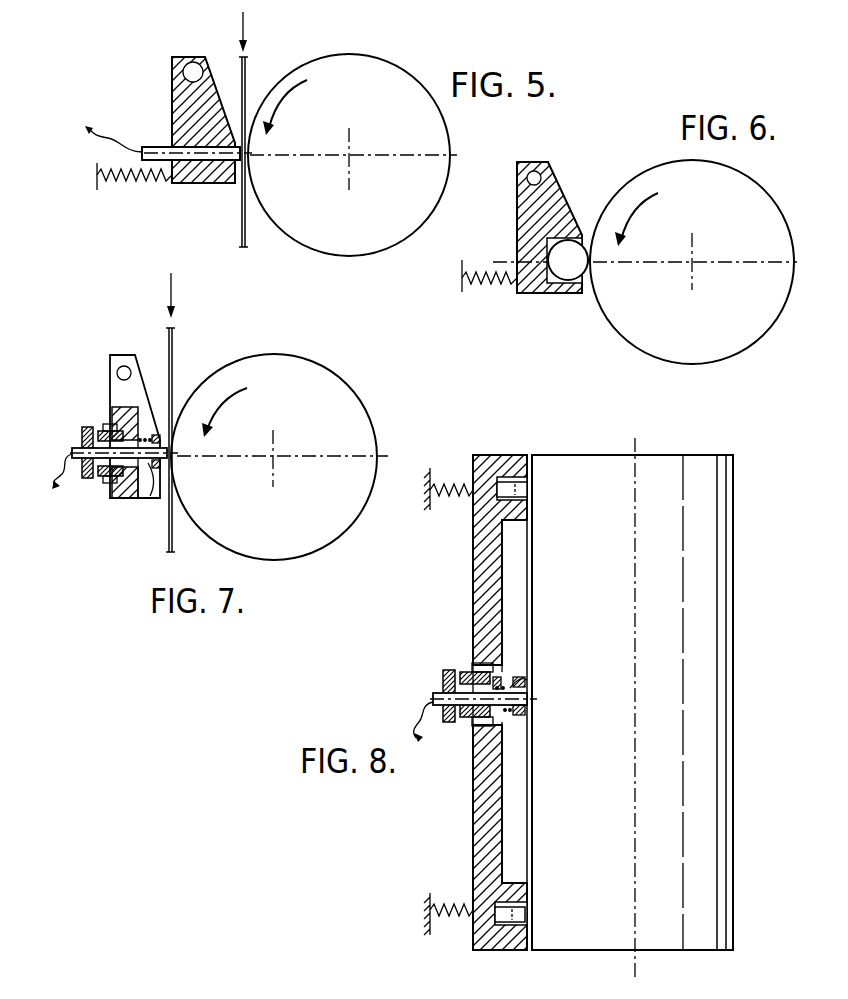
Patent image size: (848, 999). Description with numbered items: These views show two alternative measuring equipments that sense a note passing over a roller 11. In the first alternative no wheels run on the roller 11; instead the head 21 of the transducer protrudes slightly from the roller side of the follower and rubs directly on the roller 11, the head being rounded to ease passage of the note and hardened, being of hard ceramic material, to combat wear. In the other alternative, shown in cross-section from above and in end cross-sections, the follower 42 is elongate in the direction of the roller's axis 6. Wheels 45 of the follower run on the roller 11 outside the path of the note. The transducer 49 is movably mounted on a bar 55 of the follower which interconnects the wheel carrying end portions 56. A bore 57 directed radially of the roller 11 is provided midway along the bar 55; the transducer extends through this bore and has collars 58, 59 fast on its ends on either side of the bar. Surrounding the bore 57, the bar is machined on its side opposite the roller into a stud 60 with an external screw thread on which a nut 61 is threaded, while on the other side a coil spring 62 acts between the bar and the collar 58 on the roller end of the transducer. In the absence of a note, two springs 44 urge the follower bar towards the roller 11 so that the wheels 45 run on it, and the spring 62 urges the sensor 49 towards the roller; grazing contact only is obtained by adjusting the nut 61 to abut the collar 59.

In FIG. 5, the roller 11 is at (315, 55).
In FIG. 6, the roller 11 is at (660, 160).
In FIG. 7, the roller 11 is at (226, 367).
In FIG. 8, the roller 11 is at (716, 692).
In FIG. 5, the head of the transducer 21 is at (233, 162).
In FIG. 8, the head of the transducer 21 is at (531, 602).
In FIG. 6, the springs 44 is at (480, 274).
In FIG. 8, the springs 44 is at (450, 482).
In FIG. 6, the wheels 45 is at (556, 285).
In FIG. 8, the wheels 45 is at (531, 488).
In FIG. 6, the wheel carrying end portions 56 is at (563, 184).
In FIG. 8, the wheel carrying end portions 56 is at (498, 463).
In FIG. 7, the bore 57 is at (122, 428).
In FIG. 8, the bore 57 is at (500, 686).
In FIG. 7, the collar 58 is at (154, 433).
In FIG. 8, the collar 58 is at (517, 714).
In FIG. 7, the collar 59 is at (87, 480).
In FIG. 8, the collar 59 is at (455, 726).
In FIG. 7, the stud 60 is at (110, 482).
In FIG. 8, the stud 60 is at (467, 724).
In FIG. 7, the nut 61 is at (103, 430).
In FIG. 8, the nut 61 is at (472, 667).
In FIG. 7, the coil spring 62 is at (149, 467).
In FIG. 8, the coil spring 62 is at (512, 687).
In FIG. 7, the transducer 49 is at (75, 448).
In FIG. 8, the transducer 49 is at (436, 696).
In FIG. 8, the follower 42 is at (463, 600).
In FIG. 8, the bar 55 is at (471, 812).
In FIG. 8, the roll axis 6 is at (639, 441).